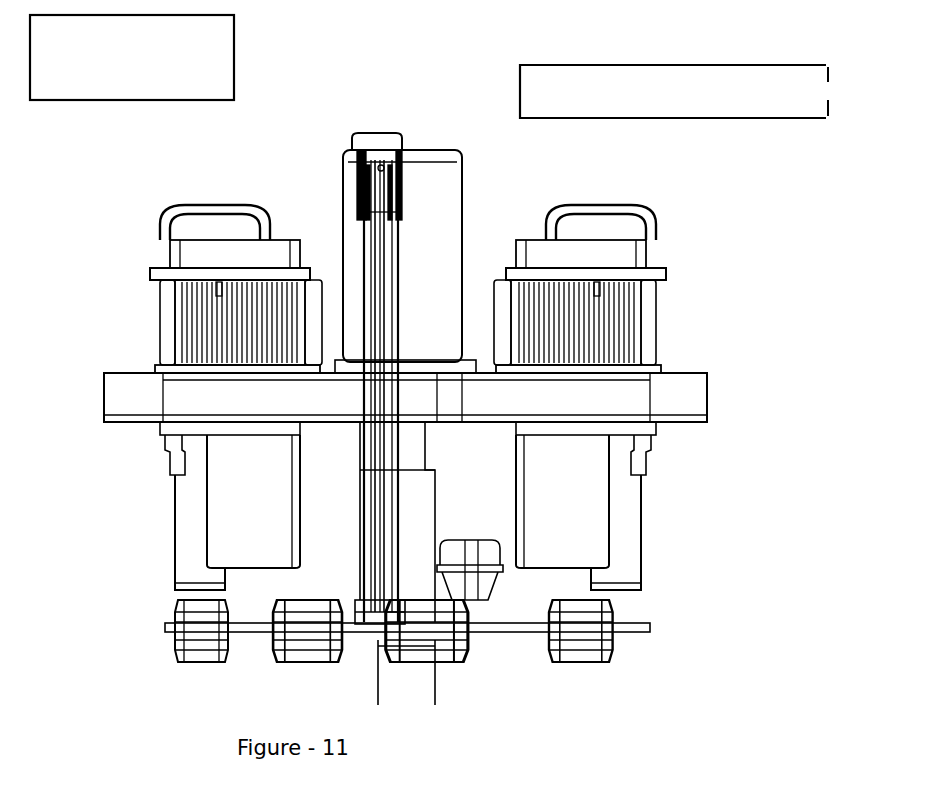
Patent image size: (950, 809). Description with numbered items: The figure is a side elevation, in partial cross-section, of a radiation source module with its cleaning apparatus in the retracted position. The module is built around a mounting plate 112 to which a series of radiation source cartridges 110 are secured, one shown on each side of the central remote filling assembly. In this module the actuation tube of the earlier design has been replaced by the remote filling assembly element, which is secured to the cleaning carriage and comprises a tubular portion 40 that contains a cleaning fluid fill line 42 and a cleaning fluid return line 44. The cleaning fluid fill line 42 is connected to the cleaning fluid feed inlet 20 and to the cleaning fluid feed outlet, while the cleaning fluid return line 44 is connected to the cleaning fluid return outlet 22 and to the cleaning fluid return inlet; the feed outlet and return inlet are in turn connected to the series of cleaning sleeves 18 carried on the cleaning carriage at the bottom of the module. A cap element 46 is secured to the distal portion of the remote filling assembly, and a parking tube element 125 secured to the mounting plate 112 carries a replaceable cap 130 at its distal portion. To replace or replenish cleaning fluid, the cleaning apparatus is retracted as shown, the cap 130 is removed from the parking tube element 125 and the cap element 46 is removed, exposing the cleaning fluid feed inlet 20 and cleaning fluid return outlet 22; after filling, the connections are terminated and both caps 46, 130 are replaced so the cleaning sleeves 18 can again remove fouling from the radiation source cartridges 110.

The replaceable cap 130 is at (356, 150).
The cap element 46 is at (402, 150).
The cleaning fluid feed inlet 20 is at (355, 158).
The cleaning fluid return outlet 22 is at (425, 158).
The radiation source cartridge 110 is at (158, 248).
The mounting plate 112 is at (708, 373).
The parking tube element 125 is at (342, 374).
The tubular portion 40 is at (366, 482).
The cleaning fluid fill line 42 is at (368, 531).
The cleaning fluid return line 44 is at (393, 528).
The cleaning sleeve 18 is at (180, 652).